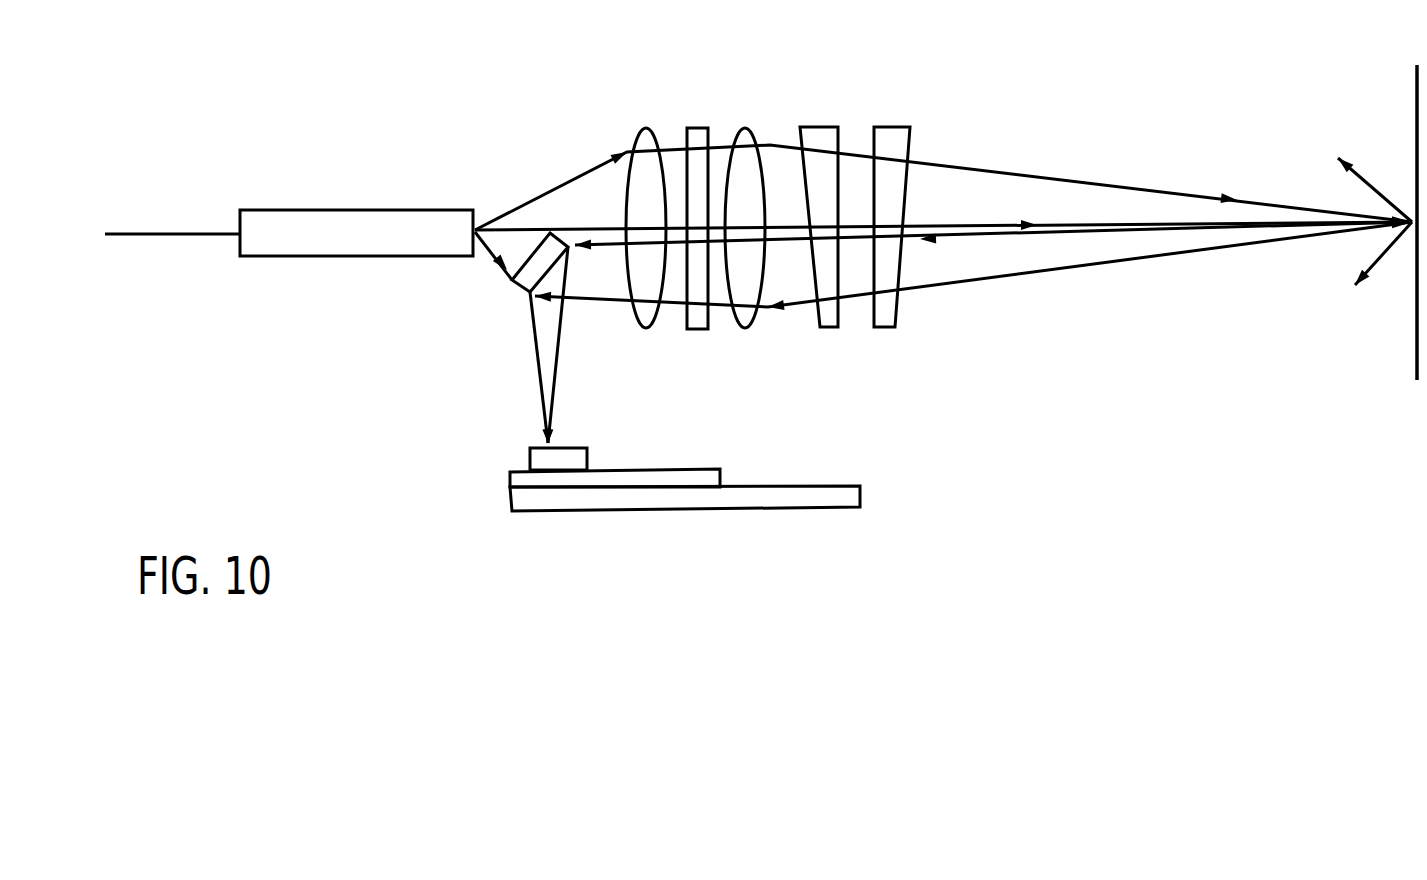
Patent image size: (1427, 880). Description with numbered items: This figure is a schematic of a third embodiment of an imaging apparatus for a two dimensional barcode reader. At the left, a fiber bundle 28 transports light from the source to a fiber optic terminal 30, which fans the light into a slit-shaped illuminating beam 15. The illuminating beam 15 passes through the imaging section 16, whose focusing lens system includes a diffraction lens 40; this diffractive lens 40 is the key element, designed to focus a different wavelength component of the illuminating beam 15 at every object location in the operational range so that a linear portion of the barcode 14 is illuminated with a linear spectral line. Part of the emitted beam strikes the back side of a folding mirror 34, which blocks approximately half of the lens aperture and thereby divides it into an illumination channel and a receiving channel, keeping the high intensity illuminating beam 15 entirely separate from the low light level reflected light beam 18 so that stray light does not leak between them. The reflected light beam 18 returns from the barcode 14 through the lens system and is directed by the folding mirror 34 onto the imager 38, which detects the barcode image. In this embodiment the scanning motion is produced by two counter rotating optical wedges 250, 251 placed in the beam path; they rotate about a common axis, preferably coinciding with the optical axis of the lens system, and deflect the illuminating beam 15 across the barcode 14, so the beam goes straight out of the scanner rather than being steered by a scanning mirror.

The barcode 14 is at (1412, 97).
The illuminating beam 15 is at (1041, 174).
The imaging section 16 is at (578, 114).
The reflected light beam 18 is at (977, 242).
The fiber bundle 28 is at (137, 234).
The fiber optic terminal 30 is at (357, 209).
The folding mirror 34 is at (520, 288).
The imager 38 is at (587, 462).
The diffraction lens 40 is at (695, 330).
The optical wedge 250 is at (818, 126).
The optical wedge 251 is at (891, 126).